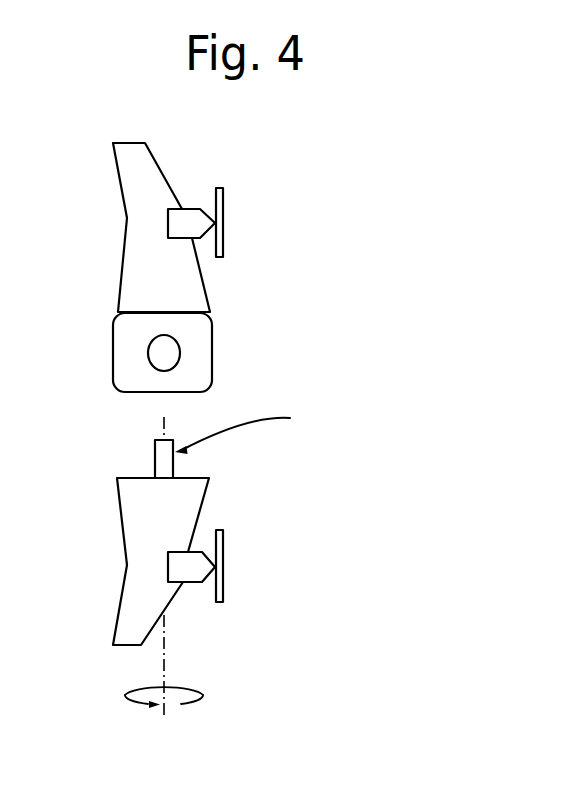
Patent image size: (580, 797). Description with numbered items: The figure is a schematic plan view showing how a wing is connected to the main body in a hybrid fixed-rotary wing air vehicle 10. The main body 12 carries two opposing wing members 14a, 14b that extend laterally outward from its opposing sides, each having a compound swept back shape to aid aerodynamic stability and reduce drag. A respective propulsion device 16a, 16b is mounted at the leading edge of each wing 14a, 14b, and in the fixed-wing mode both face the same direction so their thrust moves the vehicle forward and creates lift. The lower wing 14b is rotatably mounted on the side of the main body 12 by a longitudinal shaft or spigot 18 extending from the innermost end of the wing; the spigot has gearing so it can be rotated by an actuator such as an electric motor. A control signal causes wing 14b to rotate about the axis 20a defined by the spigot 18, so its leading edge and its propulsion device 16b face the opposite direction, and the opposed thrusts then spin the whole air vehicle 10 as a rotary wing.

The air vehicle 10 is at (290, 176).
The main body 12 is at (130, 343).
The wing member 14a is at (133, 193).
The wing member 14b is at (147, 555).
The propulsion device 16a is at (220, 238).
The propulsion device 16b is at (220, 580).
The spigot 18 is at (155, 462).
The axis 20a is at (165, 662).